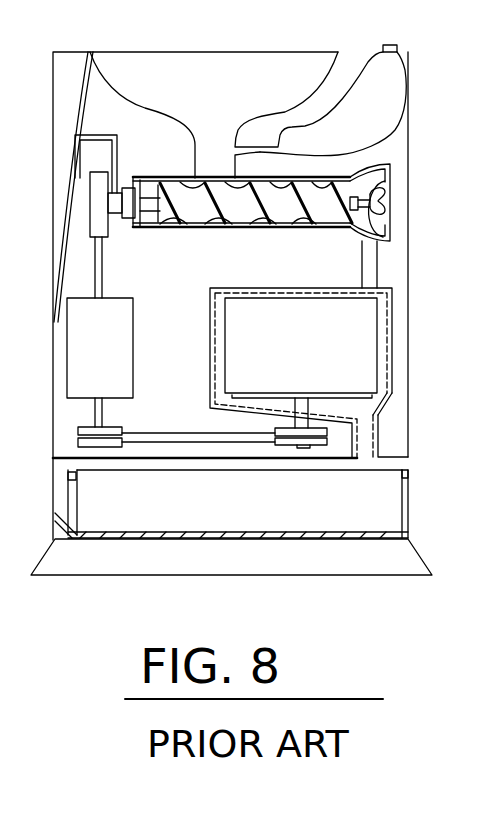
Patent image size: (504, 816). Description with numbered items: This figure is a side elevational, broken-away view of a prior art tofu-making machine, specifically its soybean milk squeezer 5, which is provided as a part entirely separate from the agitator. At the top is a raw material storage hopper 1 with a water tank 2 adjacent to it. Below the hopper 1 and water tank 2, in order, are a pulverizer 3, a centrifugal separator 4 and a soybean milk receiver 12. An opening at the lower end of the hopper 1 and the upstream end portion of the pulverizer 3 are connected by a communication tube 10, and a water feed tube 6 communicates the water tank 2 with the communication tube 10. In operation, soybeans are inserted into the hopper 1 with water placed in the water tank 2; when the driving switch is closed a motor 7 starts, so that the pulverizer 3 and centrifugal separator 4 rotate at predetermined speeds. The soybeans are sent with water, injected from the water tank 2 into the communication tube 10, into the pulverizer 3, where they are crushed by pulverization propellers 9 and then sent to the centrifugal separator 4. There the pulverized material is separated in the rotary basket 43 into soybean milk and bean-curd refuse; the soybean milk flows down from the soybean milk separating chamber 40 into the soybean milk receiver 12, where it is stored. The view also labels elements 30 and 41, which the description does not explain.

The raw material storage hopper 1 is at (232, 73).
The communication tube 10 is at (209, 137).
The water feed tube 6 is at (260, 150).
The water tank 2 is at (392, 70).
The pulverizer 3 is at (388, 181).
The pulverization propellers 9 is at (378, 222).
The nozzle insert 30 is at (420, 223).
The motor 7 is at (127, 342).
The rotary basket 43 is at (365, 332).
The soybean milk separating chamber 40 is at (393, 360).
The centrifugal separator 4 is at (368, 373).
The lower chute 41 is at (380, 413).
The soybean milk receiver 12 is at (390, 507).
The soybean milk squeezer 5 is at (503, 578).